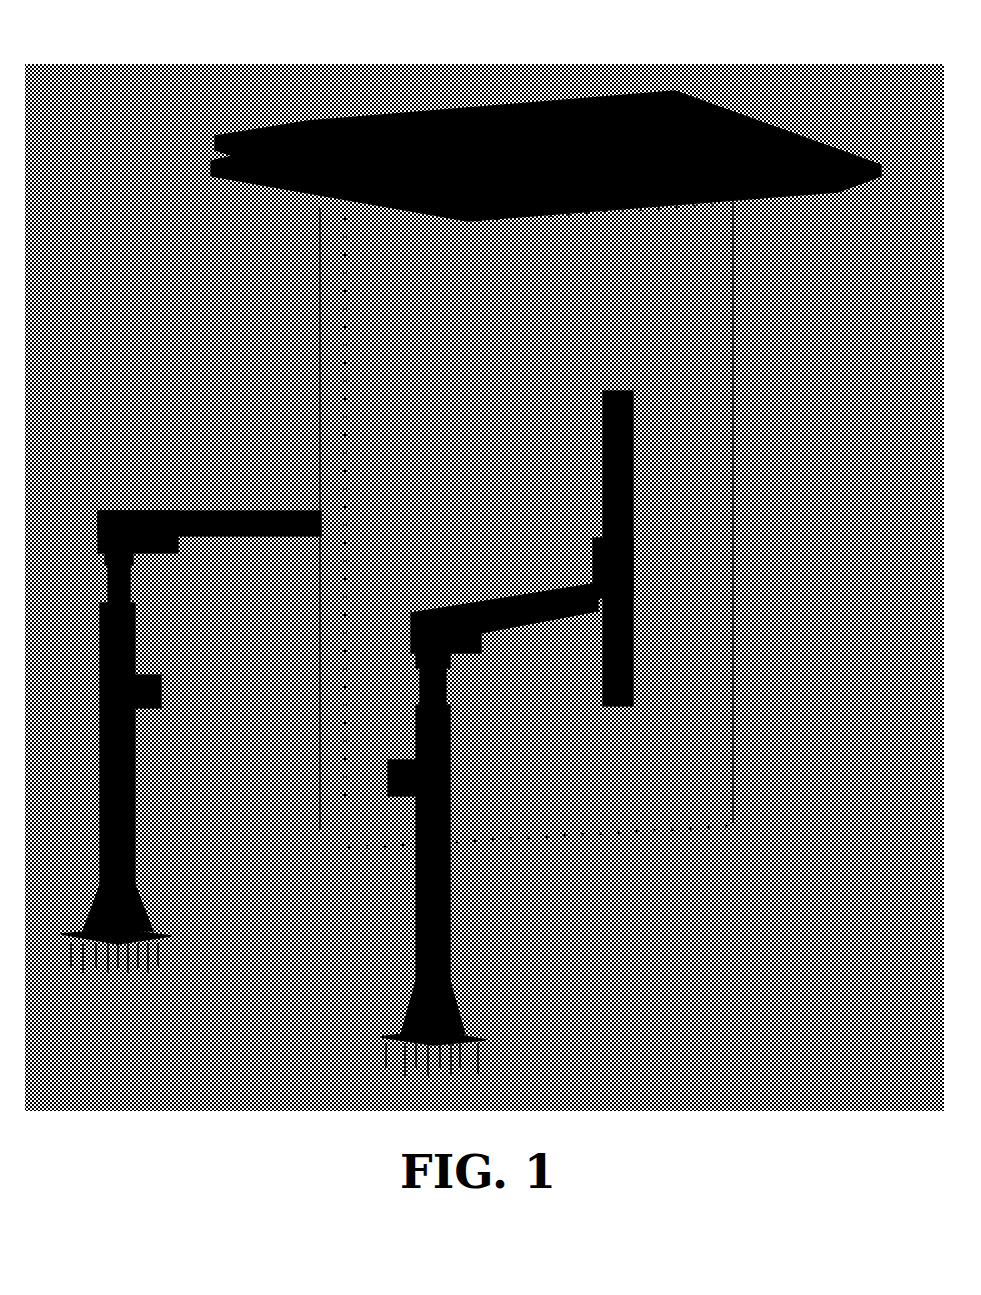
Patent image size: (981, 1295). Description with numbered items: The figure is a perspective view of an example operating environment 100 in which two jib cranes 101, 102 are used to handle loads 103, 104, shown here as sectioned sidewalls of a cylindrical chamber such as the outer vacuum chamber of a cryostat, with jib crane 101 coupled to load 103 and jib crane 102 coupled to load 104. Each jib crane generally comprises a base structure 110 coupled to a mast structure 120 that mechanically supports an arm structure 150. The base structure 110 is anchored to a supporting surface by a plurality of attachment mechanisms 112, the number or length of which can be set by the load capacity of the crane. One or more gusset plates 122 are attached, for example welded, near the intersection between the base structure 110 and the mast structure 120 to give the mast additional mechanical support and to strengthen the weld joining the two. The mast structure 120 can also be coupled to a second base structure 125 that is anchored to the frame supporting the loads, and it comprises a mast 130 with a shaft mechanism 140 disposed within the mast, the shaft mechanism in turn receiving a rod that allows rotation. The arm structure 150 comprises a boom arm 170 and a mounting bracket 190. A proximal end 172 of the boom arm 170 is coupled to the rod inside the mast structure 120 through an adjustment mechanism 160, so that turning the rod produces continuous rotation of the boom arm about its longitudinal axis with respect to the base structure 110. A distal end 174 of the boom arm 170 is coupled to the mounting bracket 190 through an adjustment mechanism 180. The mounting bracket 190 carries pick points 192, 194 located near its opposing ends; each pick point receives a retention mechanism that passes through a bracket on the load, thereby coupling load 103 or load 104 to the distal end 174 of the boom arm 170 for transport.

The operating environment 100 is at (716, 36).
The jib crane 101 is at (625, 511).
The jib crane 102 is at (310, 761).
The load 103 is at (514, 324).
The load 104 is at (311, 291).
The base structure 110 is at (308, 993).
The attachment mechanisms 112 is at (153, 958).
The mast structure 120 is at (281, 794).
The gusset plates 122 is at (274, 953).
The base structure 125 is at (165, 700).
The mast 130 is at (128, 771).
The shaft mechanism 140 is at (125, 578).
The arm structure 150 is at (376, 581).
The adjustment mechanism 160 is at (116, 503).
The boom arm 170 is at (259, 529).
The proximal end 172 is at (478, 574).
The distal end 174 is at (560, 562).
The adjustment mechanism 180 is at (614, 577).
The mounting bracket 190 is at (586, 548).
The pick point 192 is at (630, 392).
The pick point 194 is at (628, 690).